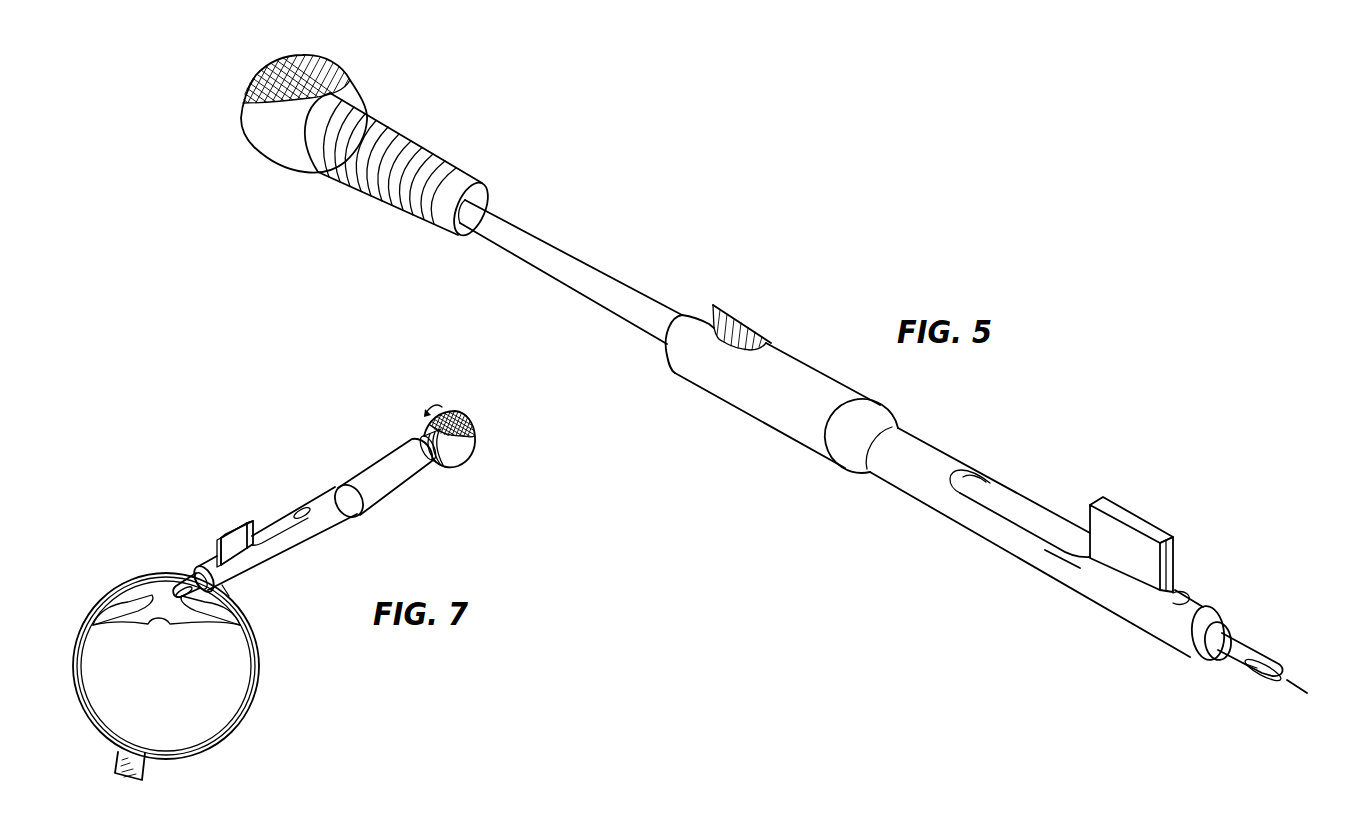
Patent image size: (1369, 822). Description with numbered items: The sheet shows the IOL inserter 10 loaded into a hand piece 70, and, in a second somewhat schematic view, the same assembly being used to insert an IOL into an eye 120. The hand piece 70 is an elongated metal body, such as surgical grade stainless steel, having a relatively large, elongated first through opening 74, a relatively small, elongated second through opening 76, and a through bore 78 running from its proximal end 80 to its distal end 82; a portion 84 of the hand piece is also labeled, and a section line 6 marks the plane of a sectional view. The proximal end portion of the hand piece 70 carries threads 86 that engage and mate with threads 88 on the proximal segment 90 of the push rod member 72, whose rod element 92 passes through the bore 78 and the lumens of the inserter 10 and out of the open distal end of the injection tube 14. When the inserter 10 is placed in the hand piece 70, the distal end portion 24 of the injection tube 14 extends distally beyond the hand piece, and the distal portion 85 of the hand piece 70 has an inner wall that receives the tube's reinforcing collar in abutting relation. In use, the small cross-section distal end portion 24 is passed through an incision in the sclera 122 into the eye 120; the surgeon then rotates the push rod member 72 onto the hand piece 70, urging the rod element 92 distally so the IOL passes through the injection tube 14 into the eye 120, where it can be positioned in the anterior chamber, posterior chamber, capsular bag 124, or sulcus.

In FIG. 5, the section line 6 is at (1059, 566).
In FIG. 5, the IOL inserter 10 is at (1148, 512).
In FIG. 5, the injection tube 14 is at (1278, 650).
In FIG. 7, the injection tube 14 is at (160, 586).
In FIG. 5, the distal end portion 24 is at (1249, 644).
In FIG. 7, the distal end portion 24 is at (186, 575).
In FIG. 5, the hand piece 70 is at (788, 326).
In FIG. 5, the push rod member 72 is at (270, 172).
In FIG. 5, the first through opening 74 is at (958, 496).
In FIG. 5, the second through opening 76 is at (1178, 590).
In FIG. 5, the through bore 78 is at (1023, 506).
In FIG. 5, the proximal end 80 is at (666, 352).
In FIG. 5, the distal end 82 is at (1219, 660).
In FIG. 5, the housing 84 is at (712, 399).
In FIG. 5, the distal portion 85 is at (1203, 604).
In FIG. 5, the threads 86 is at (712, 322).
In FIG. 5, the threads 88 is at (389, 200).
In FIG. 5, the proximal segment 90 is at (402, 150).
In FIG. 5, the rod element 92 is at (560, 288).
In FIG. 7, the eye 120 is at (268, 697).
In FIG. 7, the sclera 122 is at (232, 591).
In FIG. 7, the capsular bag 124 is at (160, 626).